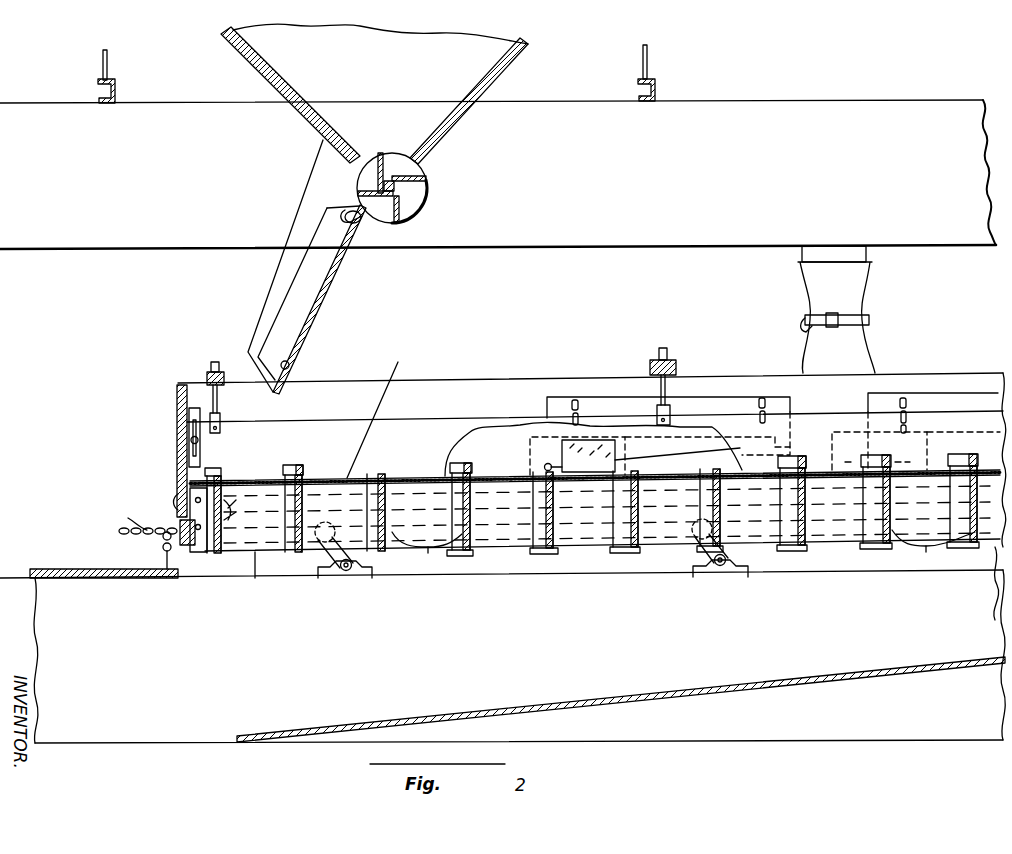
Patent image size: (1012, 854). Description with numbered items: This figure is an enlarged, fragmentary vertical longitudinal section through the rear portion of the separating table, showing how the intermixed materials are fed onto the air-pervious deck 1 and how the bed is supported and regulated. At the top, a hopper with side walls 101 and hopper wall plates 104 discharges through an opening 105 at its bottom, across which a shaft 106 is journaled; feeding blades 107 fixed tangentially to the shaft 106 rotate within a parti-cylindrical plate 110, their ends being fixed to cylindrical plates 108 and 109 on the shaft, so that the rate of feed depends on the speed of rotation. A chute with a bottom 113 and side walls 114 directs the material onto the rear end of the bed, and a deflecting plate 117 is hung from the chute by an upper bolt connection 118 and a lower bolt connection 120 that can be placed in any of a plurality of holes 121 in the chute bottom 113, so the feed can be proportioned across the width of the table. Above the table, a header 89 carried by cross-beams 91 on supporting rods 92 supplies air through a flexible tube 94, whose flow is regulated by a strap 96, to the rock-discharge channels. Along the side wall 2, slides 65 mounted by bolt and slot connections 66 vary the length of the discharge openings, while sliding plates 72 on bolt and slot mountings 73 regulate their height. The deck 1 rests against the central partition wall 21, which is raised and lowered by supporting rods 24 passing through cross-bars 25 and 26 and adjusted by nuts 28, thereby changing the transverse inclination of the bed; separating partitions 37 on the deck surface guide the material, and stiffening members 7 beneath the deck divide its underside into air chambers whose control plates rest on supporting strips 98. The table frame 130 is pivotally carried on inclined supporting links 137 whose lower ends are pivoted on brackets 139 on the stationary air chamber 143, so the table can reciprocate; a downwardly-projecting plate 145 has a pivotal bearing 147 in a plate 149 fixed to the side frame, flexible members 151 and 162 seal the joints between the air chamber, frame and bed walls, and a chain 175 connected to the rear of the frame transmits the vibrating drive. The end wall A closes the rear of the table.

The air pervious deck or table 1 is at (372, 415).
The side retaining wall 2 is at (422, 388).
The stiffening members 7 is at (683, 551).
The partition wall 21 is at (348, 404).
The supporting rods 24 is at (216, 362).
The supporting cross-bar 25 is at (206, 383).
The supporting cross-bar 26 is at (644, 371).
The nuts 28 is at (206, 372).
The separating partitions 37 is at (302, 474).
The slides 65 is at (612, 442).
The bolt and slot connections 66 is at (546, 464).
The sliding plates 72 is at (708, 400).
The bolt and slot mountings 73 is at (572, 400).
The header 89 is at (821, 116).
The cross-beams 91 is at (114, 92).
The supporting rods 92 is at (108, 64).
The flexible tube 94 is at (866, 297).
The straps 96 is at (870, 321).
The supporting strips 98 is at (540, 549).
The hopper side walls 101 is at (492, 63).
The hopper wall 104 is at (264, 66).
The opening 105 is at (368, 158).
The shaft 106 is at (396, 186).
The feeding blades 107 is at (412, 172).
The cylindrical plate 108 is at (368, 176).
The cylindrical plate 109 is at (368, 193).
The parti-cylindrical plate 110 is at (412, 212).
The chute bottom 113 is at (318, 310).
The chute side walls 114 is at (272, 270).
The deflecting plate 117 is at (285, 307).
The bolt connection 118 is at (362, 220).
The bolt connection 120 is at (283, 358).
The holes 121 is at (292, 364).
The frame 130 is at (182, 554).
The supporting links 137 is at (325, 546).
The brackets 139 is at (738, 568).
The air chamber 143 is at (720, 660).
The downwardly-projecting plate 145 is at (242, 492).
The pivotal bearing 147 is at (226, 517).
The plate 149 is at (205, 550).
The flexible member 151 is at (158, 560).
The flexible member 162 is at (178, 505).
The chain 175 is at (135, 520).
The end wall A is at (178, 415).